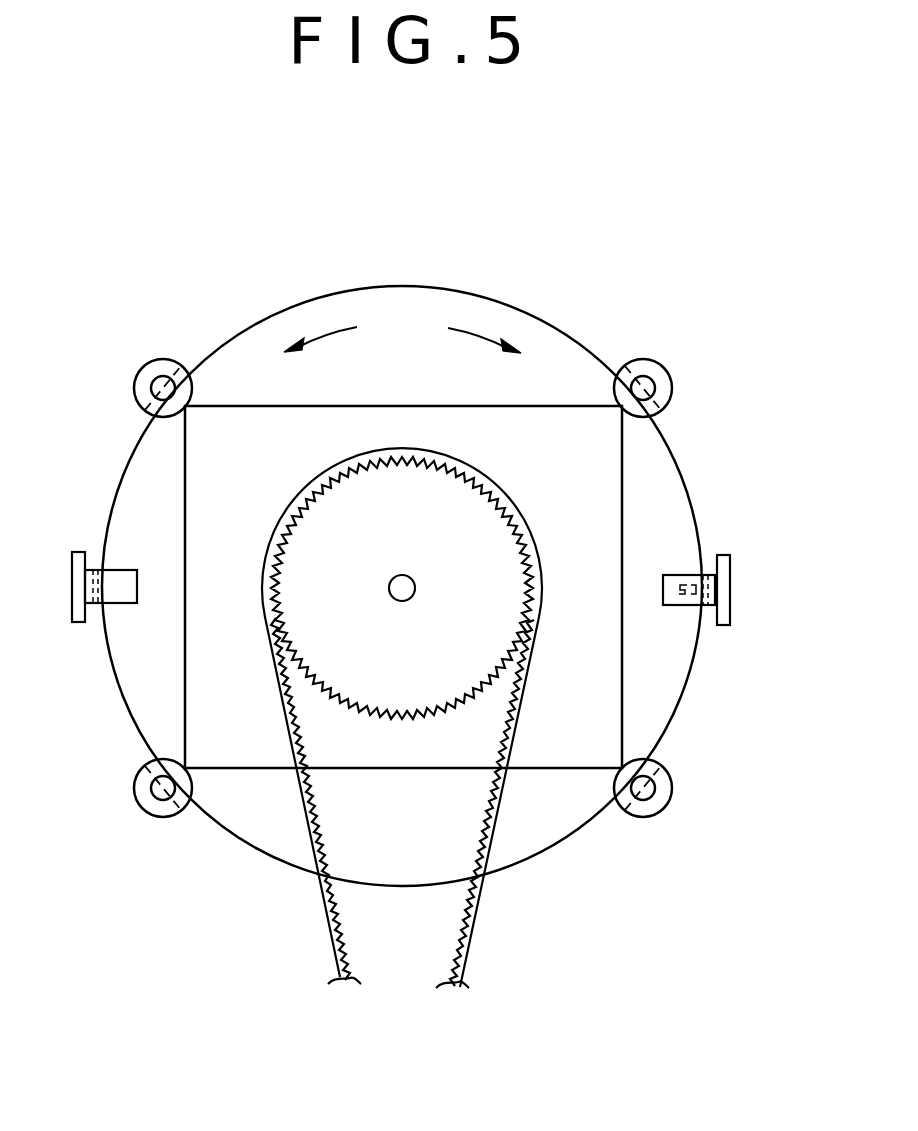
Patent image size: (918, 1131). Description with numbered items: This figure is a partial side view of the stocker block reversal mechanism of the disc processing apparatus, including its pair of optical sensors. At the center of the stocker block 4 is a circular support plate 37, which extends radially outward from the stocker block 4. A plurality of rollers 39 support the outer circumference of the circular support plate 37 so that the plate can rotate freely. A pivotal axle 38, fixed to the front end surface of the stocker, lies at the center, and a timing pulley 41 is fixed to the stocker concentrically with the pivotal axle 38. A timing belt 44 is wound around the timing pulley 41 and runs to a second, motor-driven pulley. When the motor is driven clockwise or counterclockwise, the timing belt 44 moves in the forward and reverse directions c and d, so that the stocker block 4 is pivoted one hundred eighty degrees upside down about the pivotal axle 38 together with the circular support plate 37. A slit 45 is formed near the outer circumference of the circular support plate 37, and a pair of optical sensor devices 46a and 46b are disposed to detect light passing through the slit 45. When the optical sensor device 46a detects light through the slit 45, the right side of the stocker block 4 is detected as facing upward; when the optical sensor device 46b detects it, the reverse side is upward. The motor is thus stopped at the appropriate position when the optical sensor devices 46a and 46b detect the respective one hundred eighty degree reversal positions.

The stocker block 4 is at (268, 406).
The circular support plate 37 is at (420, 287).
The pivotal axle 38 is at (400, 575).
The rollers 39 is at (153, 358).
The timing pulley 41 is at (488, 643).
The timing belt 44 is at (494, 822).
The slit 45 is at (679, 606).
The optical sensor device 46a is at (680, 575).
The optical sensor device 46b is at (114, 570).
The forward direction c is at (320, 333).
The reverse direction d is at (480, 333).